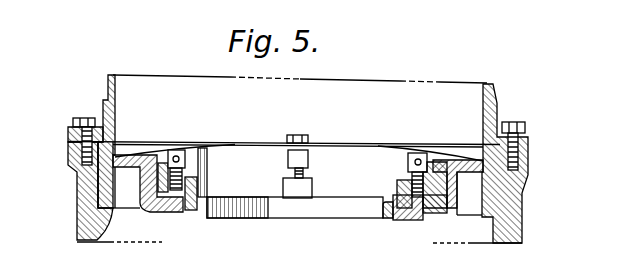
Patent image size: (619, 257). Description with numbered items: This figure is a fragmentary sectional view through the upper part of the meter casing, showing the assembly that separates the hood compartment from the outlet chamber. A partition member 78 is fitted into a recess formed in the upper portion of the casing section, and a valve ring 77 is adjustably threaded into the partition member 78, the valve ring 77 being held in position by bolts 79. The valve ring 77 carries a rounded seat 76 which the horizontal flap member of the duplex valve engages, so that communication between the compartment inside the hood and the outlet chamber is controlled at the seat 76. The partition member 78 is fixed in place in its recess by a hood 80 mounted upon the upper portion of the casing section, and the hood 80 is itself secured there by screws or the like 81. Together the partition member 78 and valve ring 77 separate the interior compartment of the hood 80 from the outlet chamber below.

The seat 76 is at (390, 219).
The valve ring 77 is at (402, 221).
The partition member 78 is at (428, 214).
The bolts 79 is at (186, 162).
The hood 80 is at (494, 90).
The screws 81 is at (524, 127).